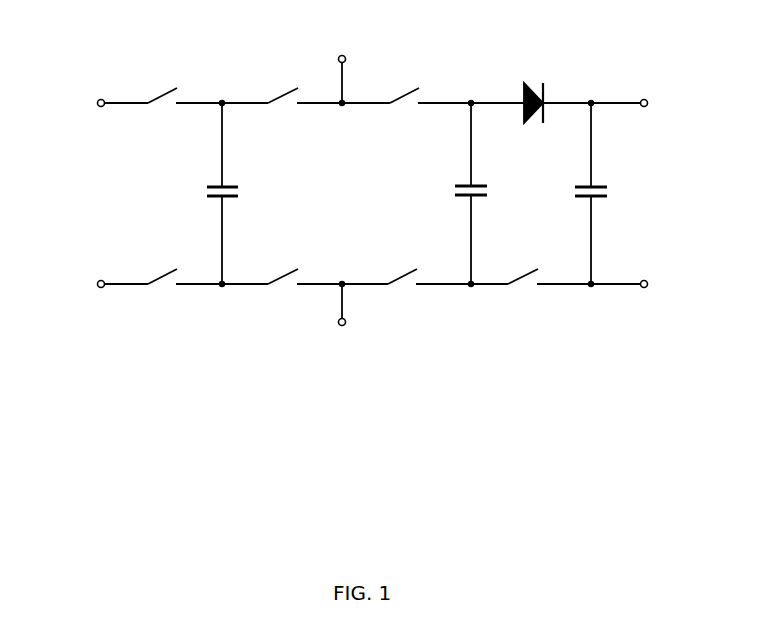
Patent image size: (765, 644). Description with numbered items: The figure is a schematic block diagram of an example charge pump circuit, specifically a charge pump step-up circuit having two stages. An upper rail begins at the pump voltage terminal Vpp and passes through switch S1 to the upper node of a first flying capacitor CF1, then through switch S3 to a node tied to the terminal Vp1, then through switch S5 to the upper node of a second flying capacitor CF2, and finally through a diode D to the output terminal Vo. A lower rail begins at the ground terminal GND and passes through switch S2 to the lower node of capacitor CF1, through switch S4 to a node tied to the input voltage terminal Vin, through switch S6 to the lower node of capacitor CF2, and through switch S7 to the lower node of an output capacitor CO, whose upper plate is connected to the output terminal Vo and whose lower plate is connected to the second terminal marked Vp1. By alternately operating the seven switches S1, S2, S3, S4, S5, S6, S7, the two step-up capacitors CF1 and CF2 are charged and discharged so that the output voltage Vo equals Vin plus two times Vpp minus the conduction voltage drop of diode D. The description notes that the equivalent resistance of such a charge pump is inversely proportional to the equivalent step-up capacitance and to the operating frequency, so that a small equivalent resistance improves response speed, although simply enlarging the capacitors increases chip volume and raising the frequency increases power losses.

The switch S1 is at (163, 81).
The switch S2 is at (163, 298).
The switch S3 is at (282, 81).
The switch S4 is at (282, 298).
The switch S5 is at (406, 81).
The switch S6 is at (406, 298).
The switch S7 is at (531, 298).
The capacitor CF1 is at (249, 193).
The capacitor CF2 is at (497, 193).
The output capacitor CO is at (611, 193).
The diode D is at (531, 88).
The pump voltage Vpp is at (68, 103).
The ground GND is at (66, 284).
The voltage terminal Vp1 is at (515, 160).
The input voltage Vin is at (344, 323).
The output voltage Vo is at (643, 103).